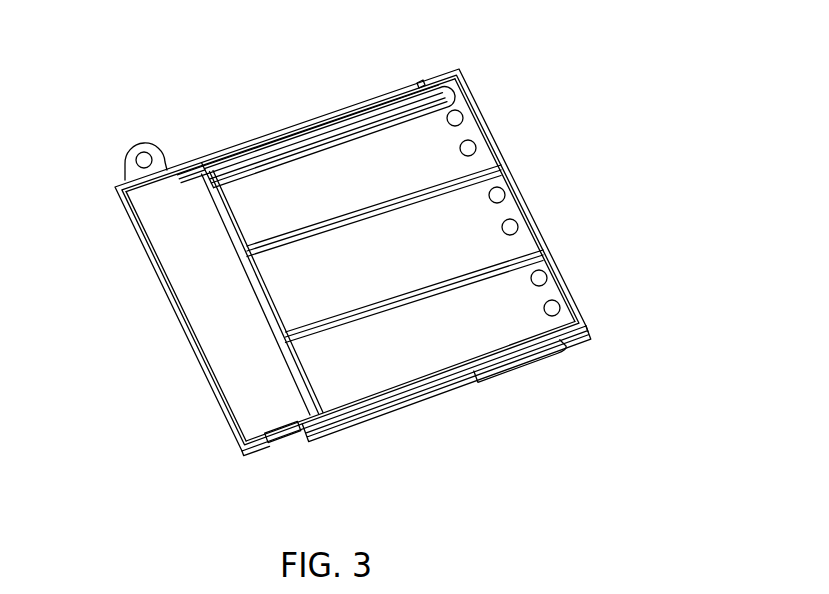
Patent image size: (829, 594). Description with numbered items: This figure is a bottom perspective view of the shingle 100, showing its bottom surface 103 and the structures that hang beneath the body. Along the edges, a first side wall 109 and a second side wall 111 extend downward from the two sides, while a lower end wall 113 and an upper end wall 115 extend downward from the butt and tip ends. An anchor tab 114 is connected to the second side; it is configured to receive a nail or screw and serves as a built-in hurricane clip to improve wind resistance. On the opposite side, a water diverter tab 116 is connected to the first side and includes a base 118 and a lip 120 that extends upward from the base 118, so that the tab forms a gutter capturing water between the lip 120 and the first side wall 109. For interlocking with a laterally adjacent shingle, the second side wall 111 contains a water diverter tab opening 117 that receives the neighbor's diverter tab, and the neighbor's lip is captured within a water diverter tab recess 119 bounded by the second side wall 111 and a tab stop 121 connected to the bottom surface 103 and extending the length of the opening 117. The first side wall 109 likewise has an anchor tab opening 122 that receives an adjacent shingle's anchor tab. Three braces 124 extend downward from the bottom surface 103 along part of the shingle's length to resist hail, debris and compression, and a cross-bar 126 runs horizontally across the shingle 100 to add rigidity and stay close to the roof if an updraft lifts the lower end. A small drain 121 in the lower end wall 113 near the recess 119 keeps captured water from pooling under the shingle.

The shingle 100 is at (630, 156).
The bottom surface 103 is at (158, 228).
The first side wall 109 is at (243, 455).
The second side wall 111 is at (427, 75).
The lower end wall 113 is at (506, 138).
The anchor tab 114 is at (128, 152).
The upper end wall 115 is at (176, 336).
The water diverter tab 116 is at (456, 374).
The water diverter tab opening 117 is at (406, 90).
The water diverter tab recess 119 is at (279, 124).
The lip 120 is at (493, 373).
The tab stop 121 is at (236, 150).
The anchor tab opening 122 is at (286, 448).
The braces 124 is at (458, 81).
The cross-bar 126 is at (300, 367).
The base 118 is at (503, 362).